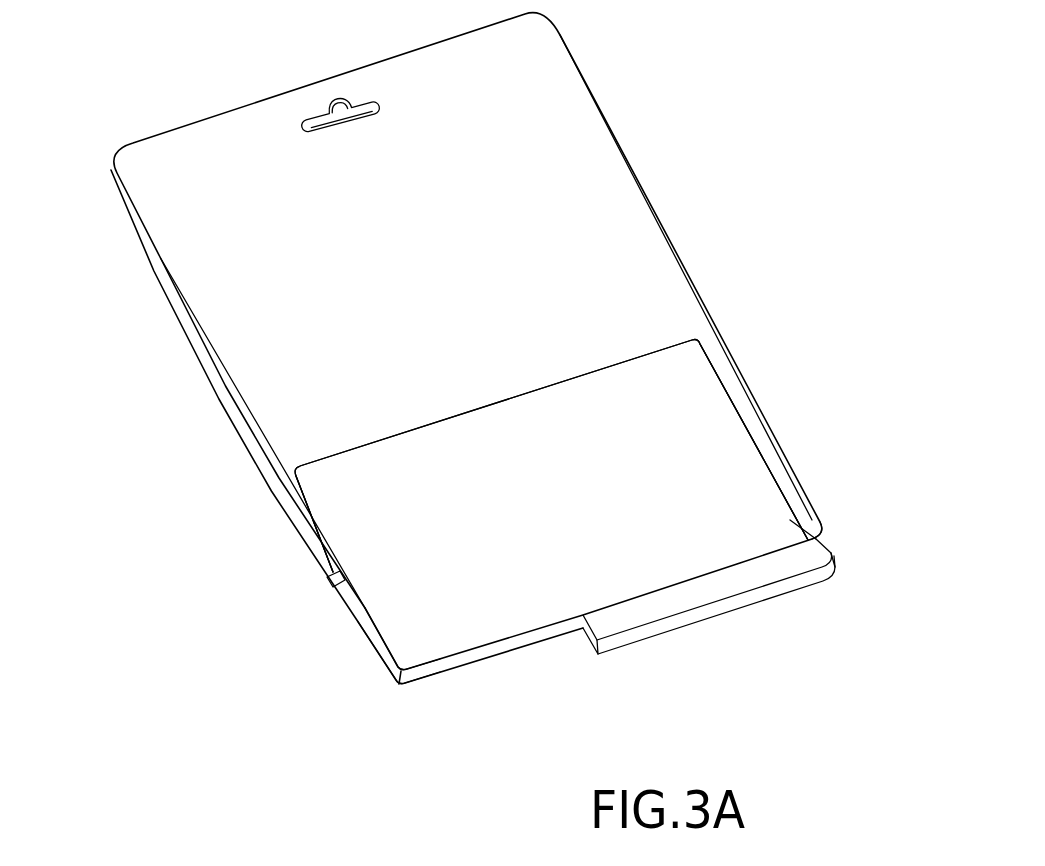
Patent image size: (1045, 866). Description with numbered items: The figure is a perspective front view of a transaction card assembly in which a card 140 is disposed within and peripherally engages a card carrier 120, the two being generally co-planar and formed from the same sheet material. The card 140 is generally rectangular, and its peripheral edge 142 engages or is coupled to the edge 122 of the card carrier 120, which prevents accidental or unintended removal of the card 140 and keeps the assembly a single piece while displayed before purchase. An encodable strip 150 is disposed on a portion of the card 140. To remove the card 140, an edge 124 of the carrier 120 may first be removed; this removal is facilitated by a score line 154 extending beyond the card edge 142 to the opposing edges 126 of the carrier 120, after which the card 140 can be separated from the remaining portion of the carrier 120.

The card carrier 120 is at (641, 222).
The edge of card carrier 122 is at (334, 587).
The edge of carrier 124 is at (822, 557).
The opposing edges of carrier 126 is at (262, 466).
The card 140 is at (655, 436).
The peripheral edge 142 is at (424, 669).
The encodable strip 150 is at (478, 408).
The score line 154 is at (814, 533).